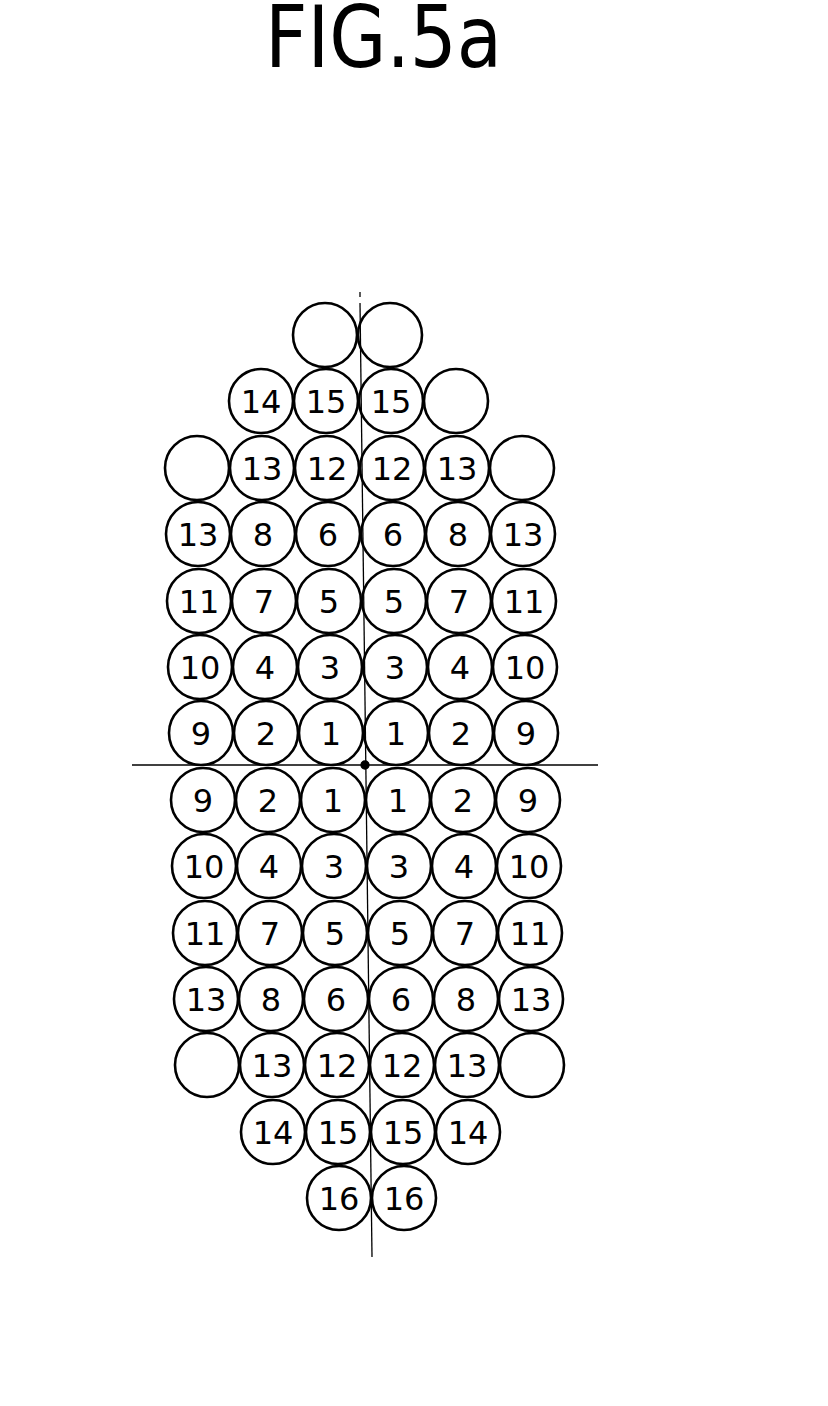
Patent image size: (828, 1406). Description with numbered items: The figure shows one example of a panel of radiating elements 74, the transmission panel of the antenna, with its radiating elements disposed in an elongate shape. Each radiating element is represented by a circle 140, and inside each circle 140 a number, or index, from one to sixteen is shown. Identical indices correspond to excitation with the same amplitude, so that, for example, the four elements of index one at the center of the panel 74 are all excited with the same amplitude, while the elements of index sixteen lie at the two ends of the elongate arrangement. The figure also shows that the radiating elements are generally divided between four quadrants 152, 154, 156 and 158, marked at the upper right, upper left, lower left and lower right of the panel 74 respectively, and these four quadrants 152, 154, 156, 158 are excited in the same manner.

The quadrant 152 is at (470, 324).
The panel of radiating elements 74 is at (505, 383).
The circle 140 is at (550, 447).
The quadrant 154 is at (173, 387).
The quadrant 156 is at (205, 1118).
The quadrant 158 is at (533, 1122).